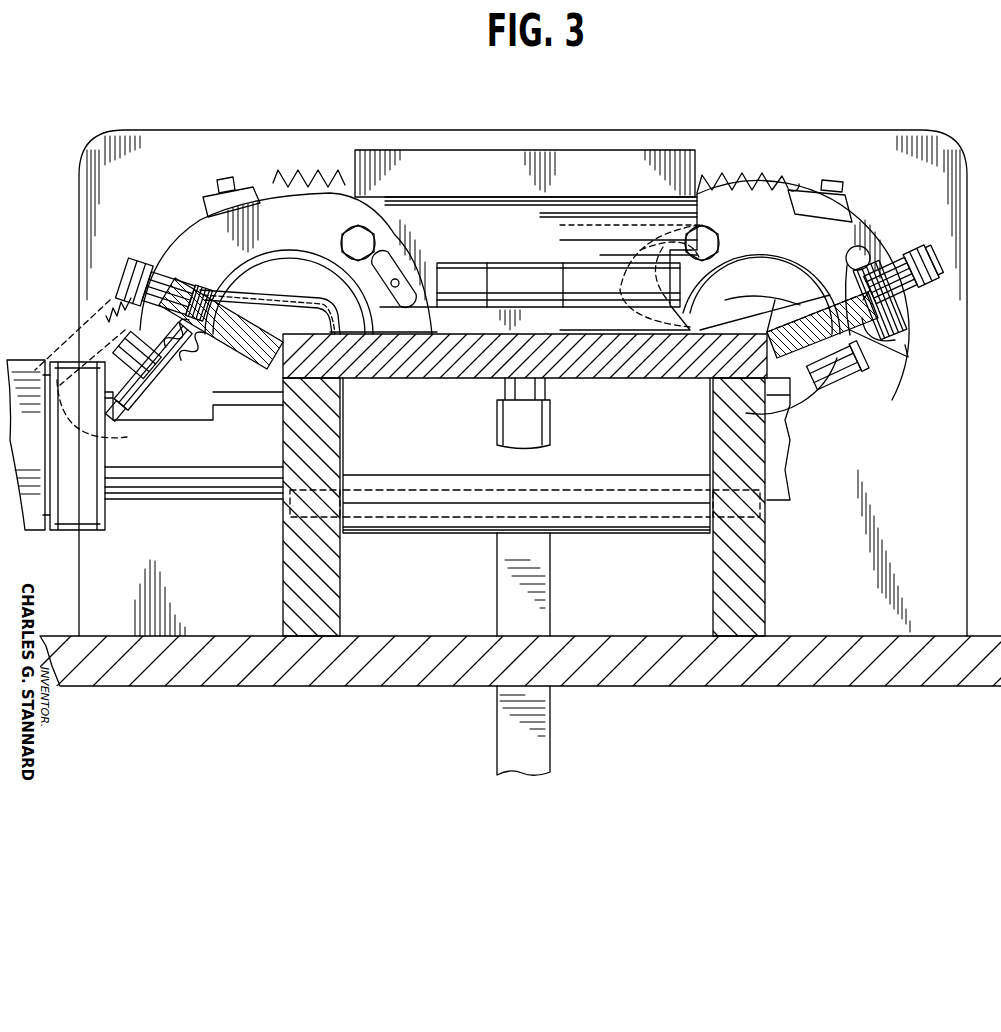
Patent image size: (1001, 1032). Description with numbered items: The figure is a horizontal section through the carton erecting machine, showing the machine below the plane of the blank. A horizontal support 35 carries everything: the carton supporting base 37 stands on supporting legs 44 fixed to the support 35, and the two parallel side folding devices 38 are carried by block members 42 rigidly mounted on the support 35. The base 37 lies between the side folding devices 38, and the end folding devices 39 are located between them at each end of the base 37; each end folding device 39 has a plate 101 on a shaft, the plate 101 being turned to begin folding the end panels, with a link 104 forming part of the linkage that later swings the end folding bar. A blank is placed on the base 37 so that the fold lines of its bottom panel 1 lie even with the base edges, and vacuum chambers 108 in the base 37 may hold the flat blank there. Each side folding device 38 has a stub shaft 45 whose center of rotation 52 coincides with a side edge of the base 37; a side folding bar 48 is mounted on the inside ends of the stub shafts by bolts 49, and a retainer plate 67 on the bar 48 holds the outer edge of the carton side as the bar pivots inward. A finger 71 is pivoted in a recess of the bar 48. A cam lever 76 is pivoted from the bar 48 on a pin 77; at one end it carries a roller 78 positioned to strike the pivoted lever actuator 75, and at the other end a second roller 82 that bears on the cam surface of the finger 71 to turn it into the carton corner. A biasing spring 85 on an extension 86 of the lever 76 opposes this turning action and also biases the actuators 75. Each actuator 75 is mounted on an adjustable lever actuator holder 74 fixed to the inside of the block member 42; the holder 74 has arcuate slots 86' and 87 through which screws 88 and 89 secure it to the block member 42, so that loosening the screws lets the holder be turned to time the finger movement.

The bottom panel 1 is at (452, 332).
The horizontal support 35 is at (437, 636).
The carton supporting base 37 is at (420, 378).
The side folding device 38 is at (147, 232).
The end folding device 39 is at (578, 143).
The block member 42 is at (195, 142).
The supporting legs 44 is at (283, 568).
The stub shaft 45 is at (292, 274).
The side folding bar 48 is at (262, 403).
The bolts 49 is at (832, 372).
The center of rotation 52 is at (285, 345).
The retainer plate 67 is at (200, 268).
The finger 71 is at (188, 380).
The lever actuator holder 74 is at (400, 254).
The lever actuator 75 is at (205, 195).
The cam lever 76 is at (137, 368).
The pin 77 is at (900, 262).
The roller 78 is at (915, 288).
The second roller 82 is at (180, 400).
The biasing spring 85 is at (305, 176).
The extension 86 is at (145, 415).
The arcuate slot 86' is at (545, 276).
The arcuate slot 87 is at (857, 248).
The screw 88 is at (365, 240).
The screw 89 is at (898, 328).
The plate 101 is at (542, 243).
The link 104 is at (535, 612).
The vacuum chamber 108 is at (555, 340).